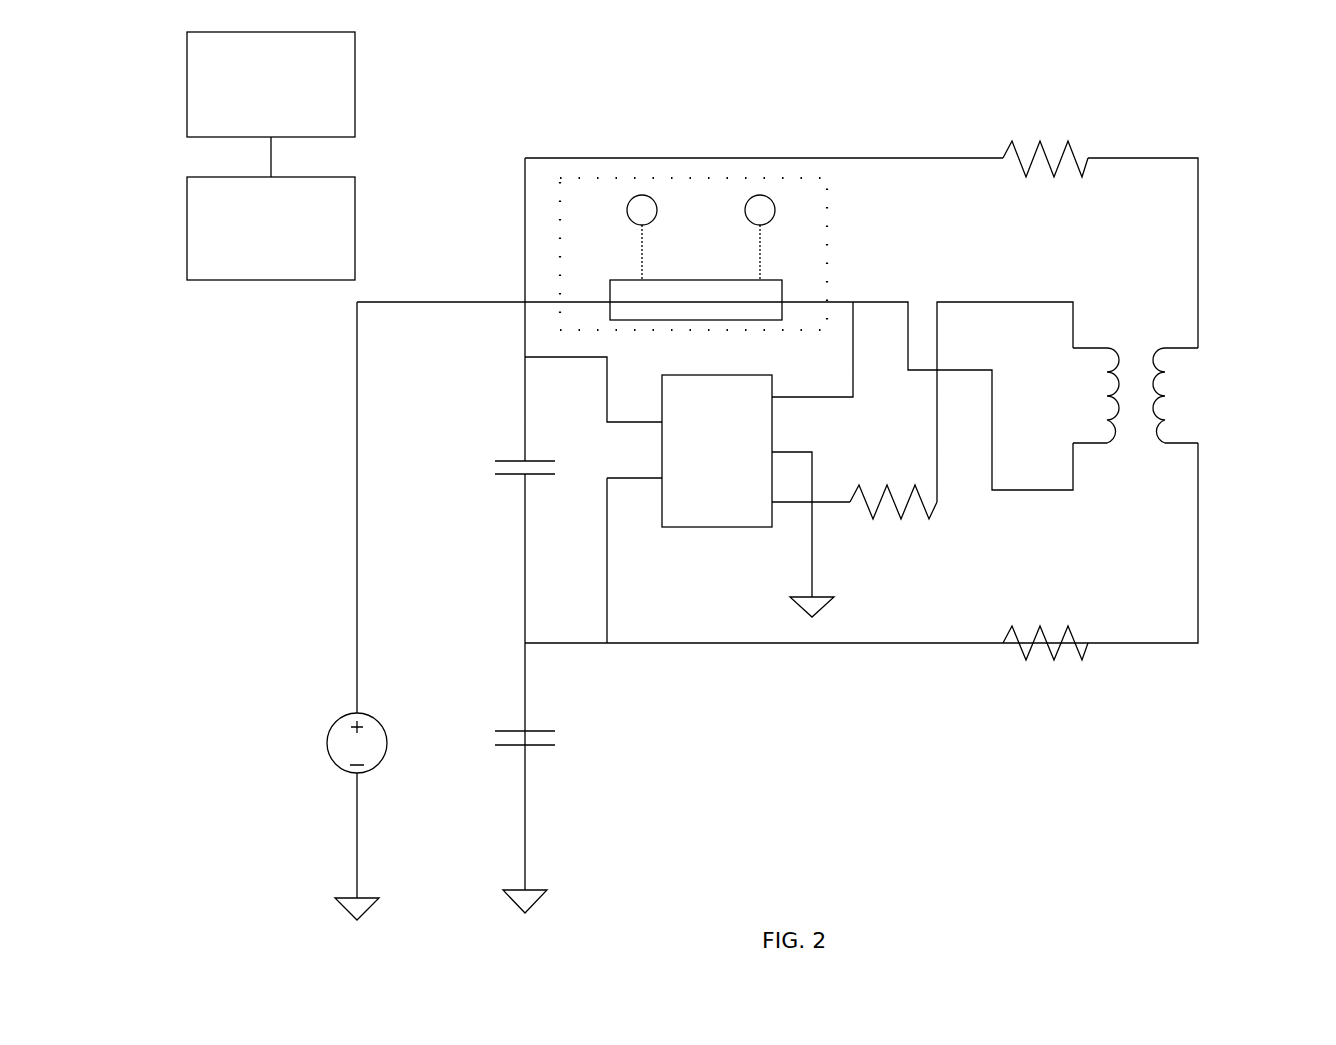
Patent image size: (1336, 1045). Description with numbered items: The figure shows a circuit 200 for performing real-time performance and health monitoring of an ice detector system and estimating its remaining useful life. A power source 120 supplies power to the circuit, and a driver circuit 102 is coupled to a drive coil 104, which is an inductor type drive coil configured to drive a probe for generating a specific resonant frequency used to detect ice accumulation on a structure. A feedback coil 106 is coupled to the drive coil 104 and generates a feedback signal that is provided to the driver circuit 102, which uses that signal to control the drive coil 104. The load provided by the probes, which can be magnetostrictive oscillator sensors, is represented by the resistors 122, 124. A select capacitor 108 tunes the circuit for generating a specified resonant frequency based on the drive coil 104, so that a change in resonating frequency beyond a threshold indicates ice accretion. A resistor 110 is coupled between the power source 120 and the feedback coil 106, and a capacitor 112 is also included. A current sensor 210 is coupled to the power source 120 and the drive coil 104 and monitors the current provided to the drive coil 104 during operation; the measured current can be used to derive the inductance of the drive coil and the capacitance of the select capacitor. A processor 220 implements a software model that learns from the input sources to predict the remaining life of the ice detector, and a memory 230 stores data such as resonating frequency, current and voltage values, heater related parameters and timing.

The circuit 200 is at (816, 64).
The current sensor 210 is at (681, 200).
The processor 220 is at (252, 106).
The memory 230 is at (252, 252).
The driver circuit 102 is at (718, 396).
The drive coil 104 is at (1097, 345).
The feedback coil 106 is at (1172, 337).
The select capacitor 108 is at (508, 460).
The resistor 110 is at (1035, 150).
The capacitor 112 is at (512, 722).
The power source 120 is at (342, 715).
The resistor 122 is at (902, 488).
The resistor 124 is at (1063, 630).